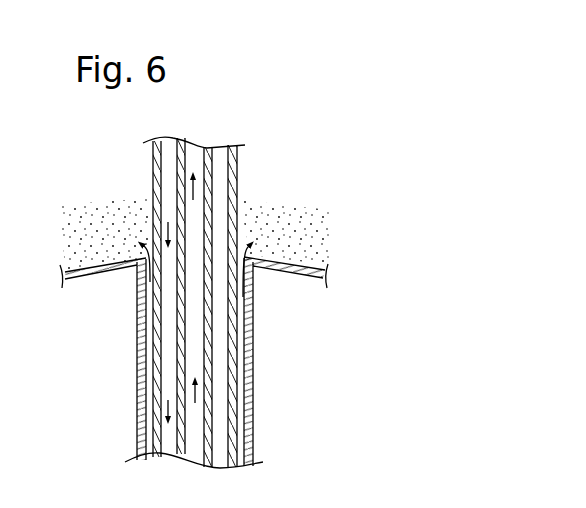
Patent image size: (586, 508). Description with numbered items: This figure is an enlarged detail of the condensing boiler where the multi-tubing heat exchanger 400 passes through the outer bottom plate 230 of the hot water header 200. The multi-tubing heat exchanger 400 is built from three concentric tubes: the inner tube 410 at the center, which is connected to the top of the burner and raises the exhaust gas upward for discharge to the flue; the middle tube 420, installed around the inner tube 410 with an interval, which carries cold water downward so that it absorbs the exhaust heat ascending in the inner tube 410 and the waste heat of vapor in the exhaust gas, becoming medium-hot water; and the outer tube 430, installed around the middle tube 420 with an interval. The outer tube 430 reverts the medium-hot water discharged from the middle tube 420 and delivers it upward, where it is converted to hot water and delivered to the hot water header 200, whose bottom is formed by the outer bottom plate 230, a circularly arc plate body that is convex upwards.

The hot water header 200 is at (281, 230).
The outer bottom plate 230 is at (95, 267).
The multi-tubing heat exchanger 400 is at (305, 325).
The inner tube 410 is at (208, 413).
The middle tube 420 is at (233, 378).
The outer tube 430 is at (253, 337).